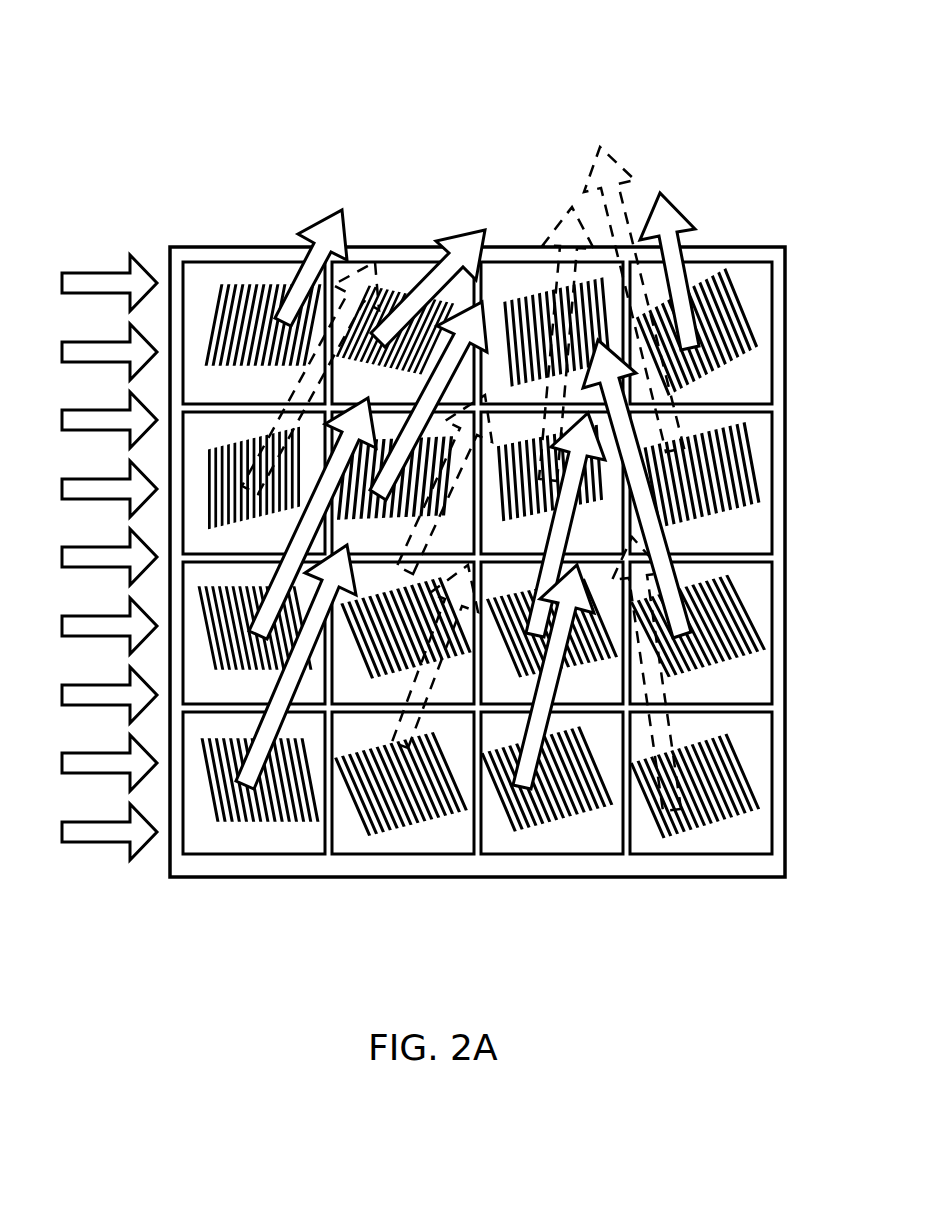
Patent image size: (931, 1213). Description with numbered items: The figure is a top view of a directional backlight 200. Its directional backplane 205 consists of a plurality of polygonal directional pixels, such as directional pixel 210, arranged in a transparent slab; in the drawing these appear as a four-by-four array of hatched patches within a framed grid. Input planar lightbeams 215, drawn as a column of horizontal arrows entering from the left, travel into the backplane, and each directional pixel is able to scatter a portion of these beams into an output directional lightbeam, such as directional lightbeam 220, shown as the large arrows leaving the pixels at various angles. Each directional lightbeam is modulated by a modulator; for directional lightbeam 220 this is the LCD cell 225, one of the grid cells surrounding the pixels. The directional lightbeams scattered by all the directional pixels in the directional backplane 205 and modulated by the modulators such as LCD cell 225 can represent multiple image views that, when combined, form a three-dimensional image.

The directional backlight 200 is at (450, 82).
The directional backplane 205 is at (722, 255).
The directional pixel 210 is at (232, 312).
The input planar lightbeams 215 is at (70, 272).
The directional lightbeam 220 is at (343, 222).
The LCD cell 225 is at (277, 273).